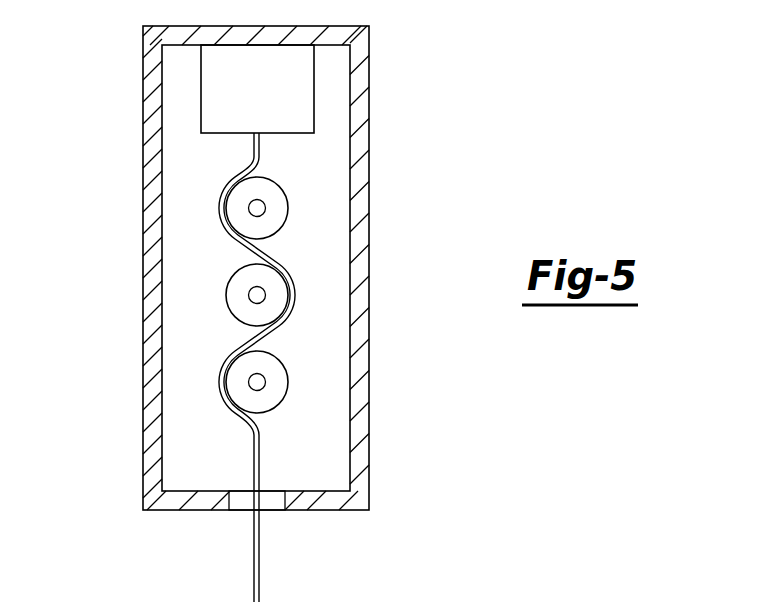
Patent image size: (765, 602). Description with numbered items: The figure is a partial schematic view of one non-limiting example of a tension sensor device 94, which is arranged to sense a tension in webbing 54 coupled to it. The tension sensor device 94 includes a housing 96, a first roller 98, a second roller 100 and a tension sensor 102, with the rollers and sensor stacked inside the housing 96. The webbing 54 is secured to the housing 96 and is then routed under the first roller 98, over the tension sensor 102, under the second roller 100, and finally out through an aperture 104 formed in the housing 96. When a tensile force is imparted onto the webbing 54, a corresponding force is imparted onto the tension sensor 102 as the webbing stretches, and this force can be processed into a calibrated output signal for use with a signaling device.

The webbing 54 is at (262, 567).
The tension sensor device 94 is at (402, 112).
The housing 96 is at (145, 200).
The first roller 98 is at (290, 198).
The second roller 100 is at (289, 365).
The tension sensor 102 is at (227, 285).
The aperture 104 is at (237, 511).